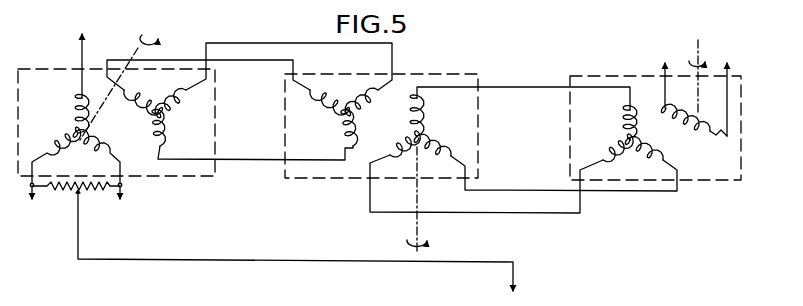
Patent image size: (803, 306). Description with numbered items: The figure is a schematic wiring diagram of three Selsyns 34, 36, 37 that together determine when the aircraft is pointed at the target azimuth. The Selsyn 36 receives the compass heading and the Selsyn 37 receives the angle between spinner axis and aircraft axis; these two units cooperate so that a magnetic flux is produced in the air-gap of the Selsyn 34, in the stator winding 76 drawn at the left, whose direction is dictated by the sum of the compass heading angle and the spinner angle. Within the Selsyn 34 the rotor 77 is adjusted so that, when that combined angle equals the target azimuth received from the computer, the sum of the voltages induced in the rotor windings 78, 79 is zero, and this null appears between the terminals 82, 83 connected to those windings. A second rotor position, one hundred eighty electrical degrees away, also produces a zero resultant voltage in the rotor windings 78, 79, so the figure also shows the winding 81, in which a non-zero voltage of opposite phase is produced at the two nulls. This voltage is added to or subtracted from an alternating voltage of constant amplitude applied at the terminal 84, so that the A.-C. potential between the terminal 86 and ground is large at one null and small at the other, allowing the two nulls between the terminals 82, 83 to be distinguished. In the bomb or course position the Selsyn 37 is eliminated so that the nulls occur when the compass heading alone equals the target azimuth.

The Selsyn 34 is at (128, 126).
The Selsyn 36 is at (678, 146).
The Selsyn 37 is at (390, 131).
The stator winding 76 is at (177, 115).
The rotor 77 is at (66, 127).
The rotor winding 78 is at (112, 146).
The rotor winding 79 is at (51, 155).
The winding 81 is at (74, 99).
The terminal 82 is at (34, 203).
The terminal 83 is at (122, 204).
The terminal 84 is at (84, 38).
The terminal 86 is at (308, 246).